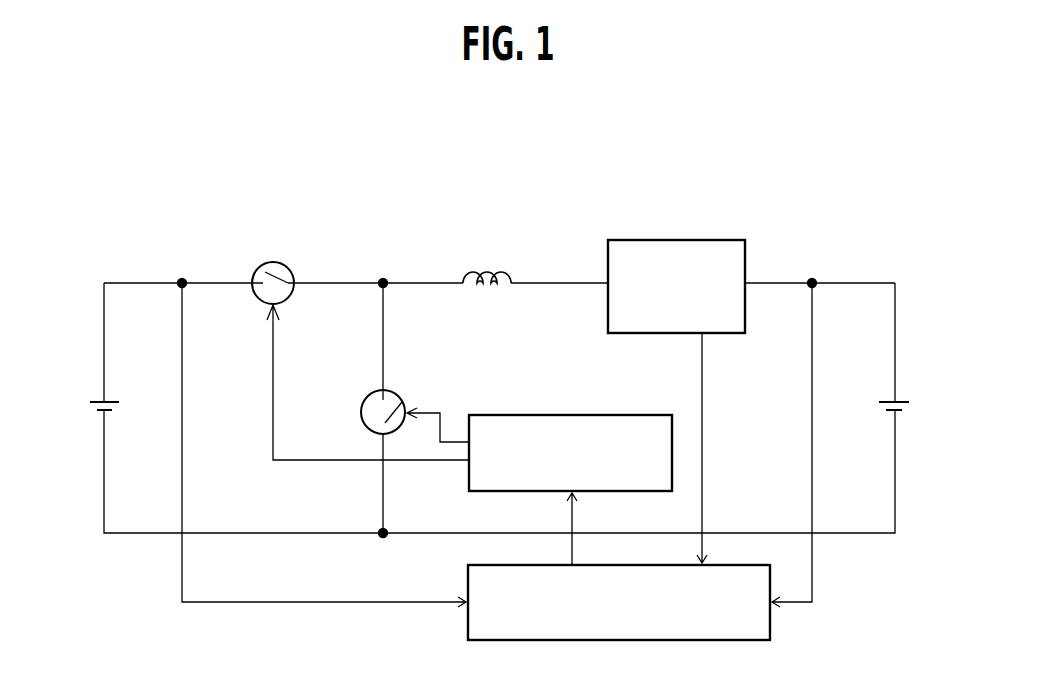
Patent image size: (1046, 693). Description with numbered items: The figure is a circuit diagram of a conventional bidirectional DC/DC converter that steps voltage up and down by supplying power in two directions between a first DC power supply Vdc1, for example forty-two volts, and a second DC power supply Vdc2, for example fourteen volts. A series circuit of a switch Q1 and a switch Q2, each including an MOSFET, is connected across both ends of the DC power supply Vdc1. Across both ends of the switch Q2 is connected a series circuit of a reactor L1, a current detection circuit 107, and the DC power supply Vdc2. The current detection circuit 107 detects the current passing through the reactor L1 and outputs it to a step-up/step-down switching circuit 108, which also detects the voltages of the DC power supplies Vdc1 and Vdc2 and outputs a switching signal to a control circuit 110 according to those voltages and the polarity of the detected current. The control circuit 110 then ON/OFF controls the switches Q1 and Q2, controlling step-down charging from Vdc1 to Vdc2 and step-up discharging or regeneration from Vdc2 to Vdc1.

The current detection circuit 107 is at (676, 239).
The step-up/step-down switching circuit 108 is at (633, 641).
The control circuit 110 is at (547, 415).
The switch Q1 is at (360, 340).
The switch Q2 is at (398, 416).
The reactor L1 is at (487, 259).
The DC power supply Vdc1 is at (80, 389).
The DC power supply Vdc2 is at (917, 390).